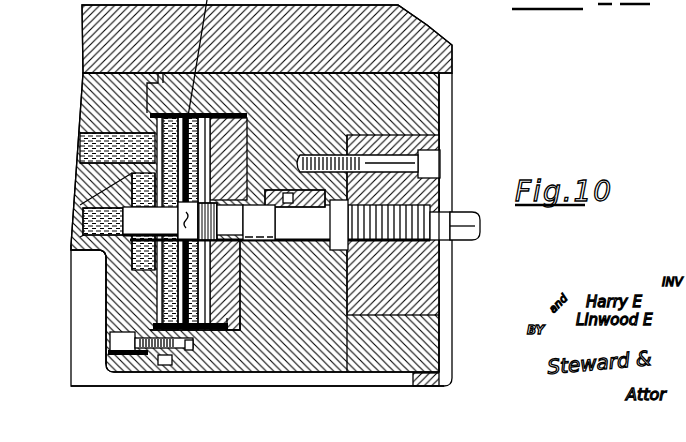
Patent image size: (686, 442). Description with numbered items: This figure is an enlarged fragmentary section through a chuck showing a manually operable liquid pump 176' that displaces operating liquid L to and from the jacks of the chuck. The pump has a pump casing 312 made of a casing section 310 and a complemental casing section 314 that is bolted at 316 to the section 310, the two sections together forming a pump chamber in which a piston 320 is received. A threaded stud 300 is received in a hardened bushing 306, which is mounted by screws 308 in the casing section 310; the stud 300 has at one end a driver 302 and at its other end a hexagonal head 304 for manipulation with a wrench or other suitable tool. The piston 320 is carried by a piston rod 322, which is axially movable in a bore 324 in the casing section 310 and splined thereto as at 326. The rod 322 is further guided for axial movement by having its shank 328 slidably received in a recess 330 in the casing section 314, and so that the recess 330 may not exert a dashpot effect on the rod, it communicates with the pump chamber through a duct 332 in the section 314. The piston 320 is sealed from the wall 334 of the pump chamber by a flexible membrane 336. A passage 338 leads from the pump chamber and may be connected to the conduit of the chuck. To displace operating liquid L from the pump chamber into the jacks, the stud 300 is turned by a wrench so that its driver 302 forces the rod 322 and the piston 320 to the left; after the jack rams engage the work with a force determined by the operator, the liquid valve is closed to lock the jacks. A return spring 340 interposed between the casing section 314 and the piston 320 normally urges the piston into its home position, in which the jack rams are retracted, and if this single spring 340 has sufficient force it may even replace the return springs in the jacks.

The threaded stud 300 is at (442, 193).
The driver 302 is at (340, 228).
The hexagonal head 304 is at (478, 208).
The hardened bushing 306 is at (430, 272).
The screws 308 is at (428, 160).
The casing section 310 is at (415, 110).
The pump casing 312 is at (277, 362).
The complemental casing section 314 is at (120, 296).
The bolt 316 is at (115, 341).
The piston 320 is at (228, 330).
The piston rod 322 is at (259, 222).
The bore 324 is at (446, 255).
The spline 326 is at (220, 221).
The shank 328 is at (150, 221).
The recess 330 is at (83, 233).
The duct 332 is at (90, 195).
The wall of the pump chamber 334 is at (218, 330).
The flexible membrane 336 is at (160, 363).
The passage 338 is at (92, 150).
The return spring 340 is at (130, 268).
The liquid pump 176' is at (60, 279).
The operating liquid L is at (85, 173).